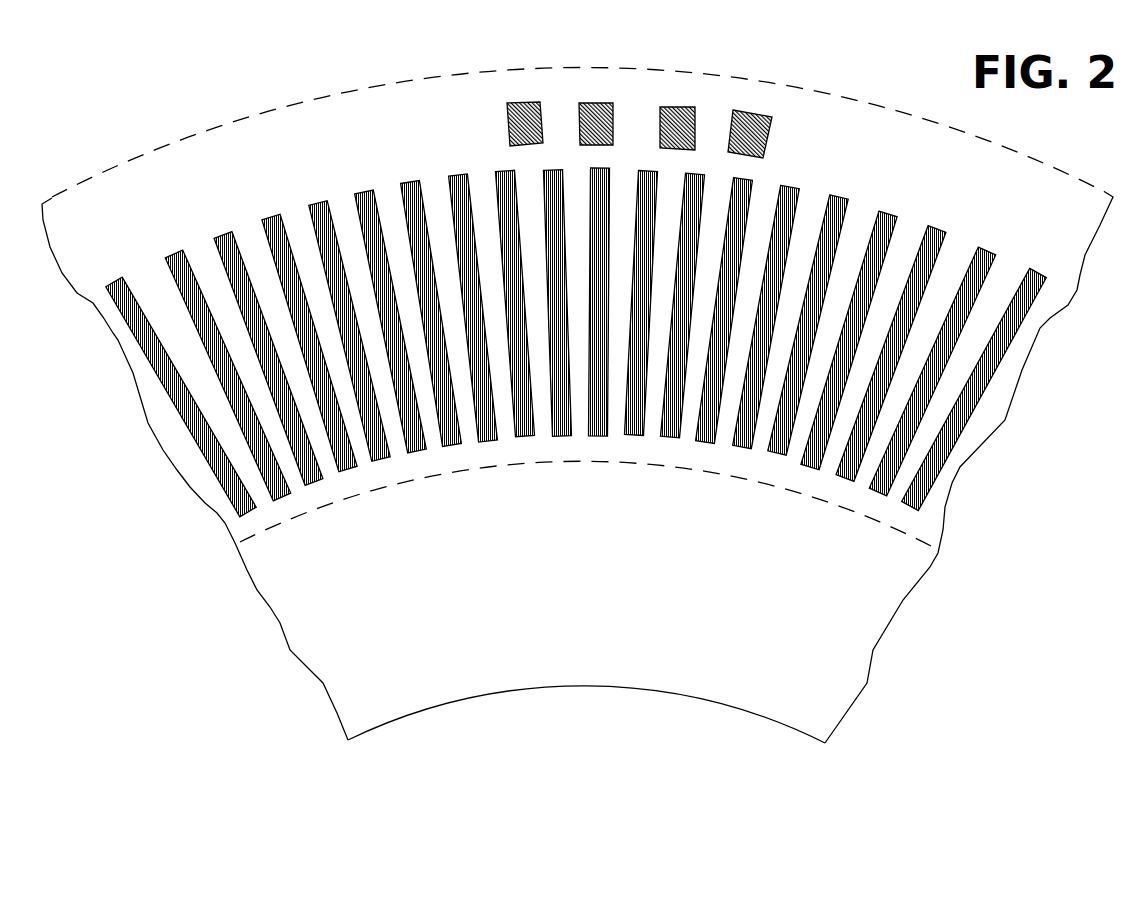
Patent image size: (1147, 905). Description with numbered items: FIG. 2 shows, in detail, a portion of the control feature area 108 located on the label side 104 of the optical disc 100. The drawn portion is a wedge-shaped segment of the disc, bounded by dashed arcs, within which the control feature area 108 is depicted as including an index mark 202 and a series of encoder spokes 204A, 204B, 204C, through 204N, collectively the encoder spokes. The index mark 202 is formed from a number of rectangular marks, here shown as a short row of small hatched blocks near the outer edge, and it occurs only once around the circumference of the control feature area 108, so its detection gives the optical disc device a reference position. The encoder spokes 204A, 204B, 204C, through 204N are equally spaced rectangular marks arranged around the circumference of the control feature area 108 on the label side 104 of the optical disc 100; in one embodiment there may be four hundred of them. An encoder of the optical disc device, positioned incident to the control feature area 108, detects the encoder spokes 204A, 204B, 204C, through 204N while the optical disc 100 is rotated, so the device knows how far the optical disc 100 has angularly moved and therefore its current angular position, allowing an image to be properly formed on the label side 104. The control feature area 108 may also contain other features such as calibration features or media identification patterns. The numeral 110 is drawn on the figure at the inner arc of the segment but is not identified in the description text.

The optical disc 100 is at (471, 762).
The label side 104 is at (857, 658).
The control feature area 108 is at (426, 128).
The inner surface 110 is at (730, 708).
The index mark 202 is at (782, 92).
The encoder spoke 204A is at (323, 480).
The encoder spoke 204B is at (290, 493).
The encoder spoke 204C is at (253, 510).
The encoder spoke 204N is at (903, 503).